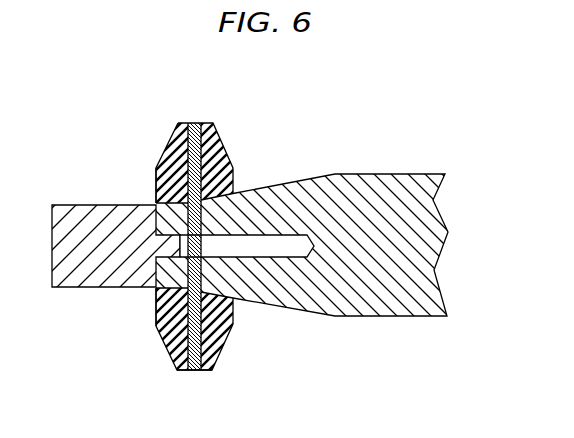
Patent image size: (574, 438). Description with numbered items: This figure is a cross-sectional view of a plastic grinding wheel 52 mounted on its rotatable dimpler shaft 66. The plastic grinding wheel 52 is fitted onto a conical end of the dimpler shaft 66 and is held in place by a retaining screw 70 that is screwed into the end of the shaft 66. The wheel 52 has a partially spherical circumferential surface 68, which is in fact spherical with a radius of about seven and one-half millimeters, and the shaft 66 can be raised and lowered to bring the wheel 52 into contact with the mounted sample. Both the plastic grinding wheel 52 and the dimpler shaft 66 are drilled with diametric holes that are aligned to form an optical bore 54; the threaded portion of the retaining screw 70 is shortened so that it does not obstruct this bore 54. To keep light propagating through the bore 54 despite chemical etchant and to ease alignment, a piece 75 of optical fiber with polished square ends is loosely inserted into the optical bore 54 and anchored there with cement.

The plastic grinding wheel 52 is at (221, 124).
The optical bore 54 is at (193, 381).
The dimpler shaft 66 is at (420, 174).
The partially spherical circumferential surface 68 is at (183, 123).
The retaining screw 70 is at (80, 205).
The piece of optical fiber 75 is at (192, 123).